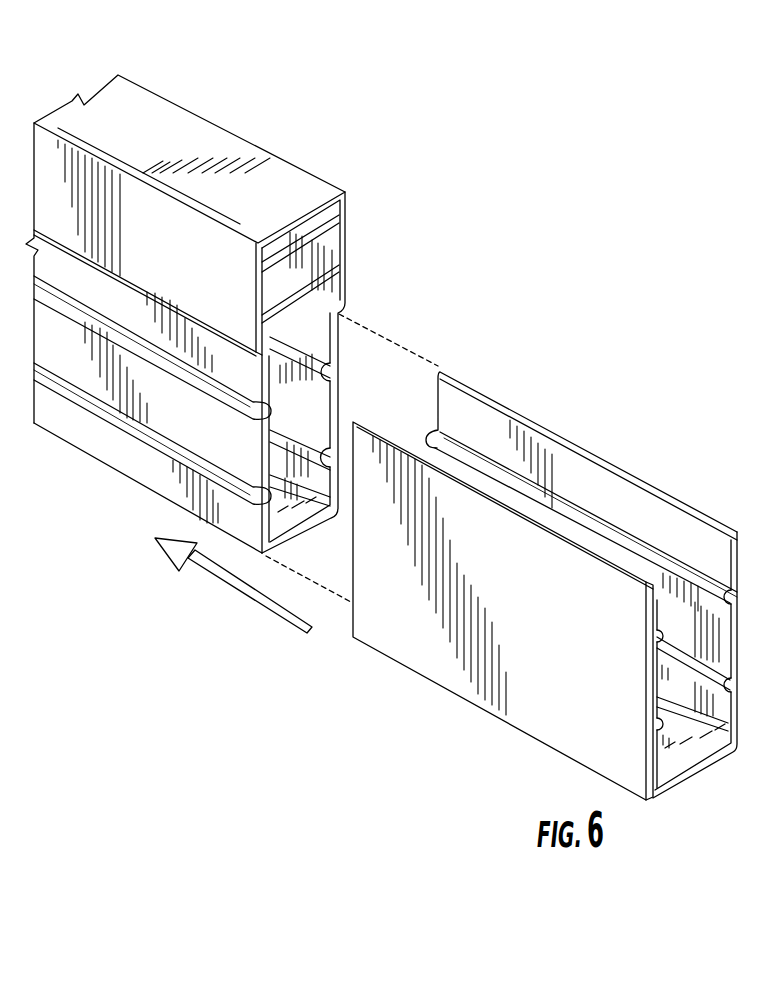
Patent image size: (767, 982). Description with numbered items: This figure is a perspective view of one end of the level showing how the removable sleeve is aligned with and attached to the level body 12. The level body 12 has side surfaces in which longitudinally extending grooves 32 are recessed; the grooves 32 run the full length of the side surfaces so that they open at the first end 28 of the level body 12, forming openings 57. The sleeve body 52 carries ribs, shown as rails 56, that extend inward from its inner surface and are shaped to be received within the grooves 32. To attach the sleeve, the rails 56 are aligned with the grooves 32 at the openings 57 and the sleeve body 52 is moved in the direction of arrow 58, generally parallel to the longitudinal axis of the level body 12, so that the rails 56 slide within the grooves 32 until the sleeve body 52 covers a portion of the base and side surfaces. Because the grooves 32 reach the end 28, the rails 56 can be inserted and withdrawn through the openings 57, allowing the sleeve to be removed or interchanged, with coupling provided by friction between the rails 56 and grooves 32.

The level body 12 is at (265, 182).
The first end 28 is at (464, 171).
The grooves 32 is at (140, 436).
The sleeve body 52 is at (518, 693).
The rails 56 is at (731, 600).
The openings 57 is at (352, 371).
The arrow 58 is at (233, 590).